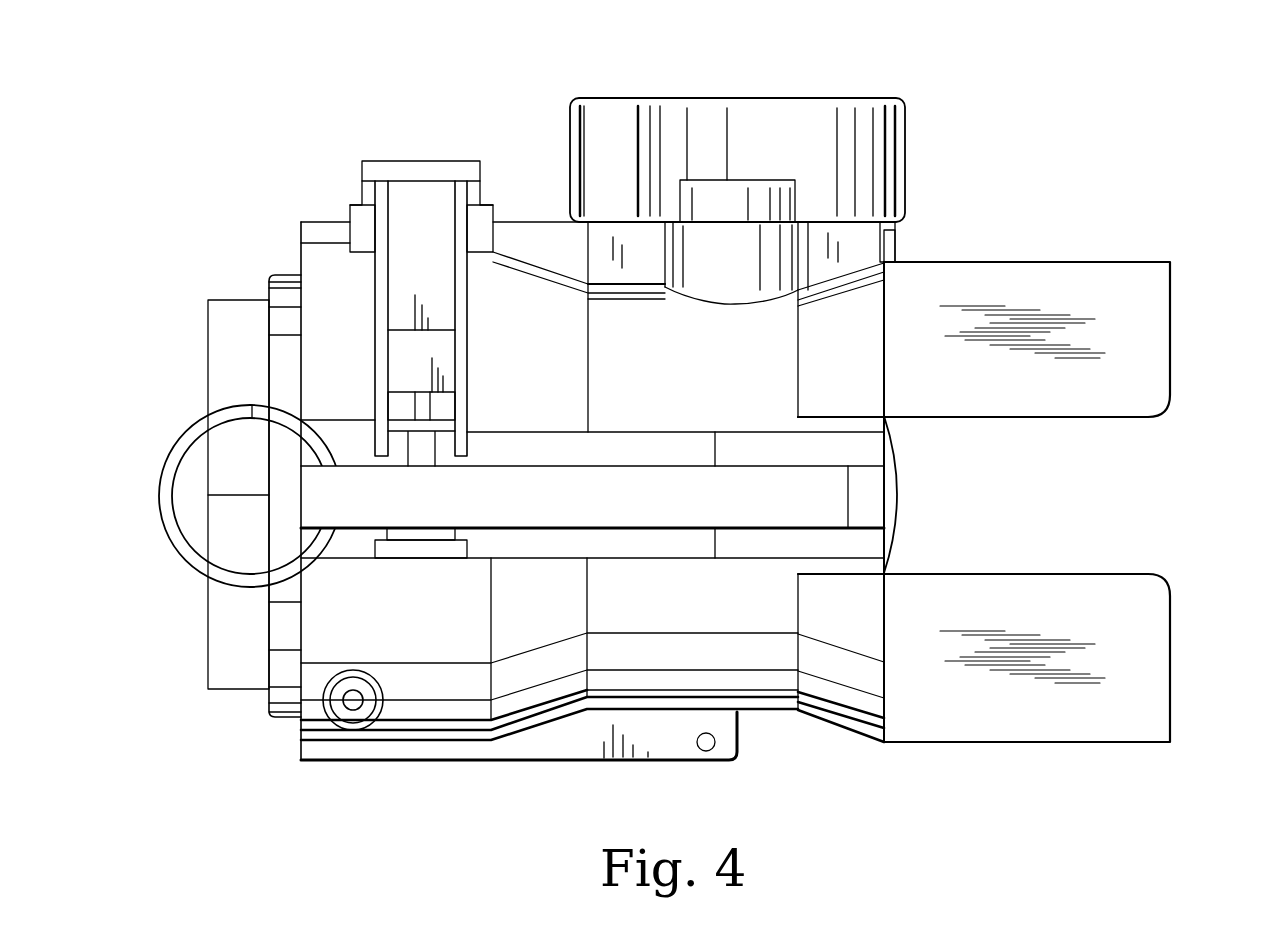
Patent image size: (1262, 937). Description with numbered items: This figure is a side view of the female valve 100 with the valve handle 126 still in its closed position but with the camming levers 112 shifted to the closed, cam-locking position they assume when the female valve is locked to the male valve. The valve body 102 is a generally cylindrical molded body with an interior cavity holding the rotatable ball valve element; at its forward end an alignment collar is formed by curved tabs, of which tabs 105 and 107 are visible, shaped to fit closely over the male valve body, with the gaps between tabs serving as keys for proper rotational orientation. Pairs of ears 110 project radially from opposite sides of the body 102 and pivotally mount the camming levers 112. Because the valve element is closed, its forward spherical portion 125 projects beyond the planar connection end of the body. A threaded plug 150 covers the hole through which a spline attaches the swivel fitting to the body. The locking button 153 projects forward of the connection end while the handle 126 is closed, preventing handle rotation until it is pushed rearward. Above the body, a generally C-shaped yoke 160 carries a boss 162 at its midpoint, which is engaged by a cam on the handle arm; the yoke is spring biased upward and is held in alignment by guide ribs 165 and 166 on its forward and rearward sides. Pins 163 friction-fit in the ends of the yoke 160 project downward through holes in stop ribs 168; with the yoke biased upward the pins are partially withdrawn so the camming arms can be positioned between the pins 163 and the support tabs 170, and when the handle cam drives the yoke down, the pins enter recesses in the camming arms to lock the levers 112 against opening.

The female valve 100 is at (1008, 830).
The valve body 102 is at (748, 652).
The curved tab 105 is at (1152, 333).
The curved tab 107 is at (1152, 660).
The ears 110 is at (855, 448).
The camming levers 112 is at (333, 502).
The spherical portion 125 is at (897, 494).
The valve handle 126 is at (790, 90).
The threaded plug 150 is at (354, 702).
The locking button 153 is at (897, 247).
The yoke 160 is at (414, 266).
The boss 162 is at (413, 167).
The pins 163 is at (420, 453).
The guide rib 165 is at (461, 311).
The guide rib 166 is at (378, 327).
The stop ribs 168 is at (400, 423).
The support tabs 170 is at (403, 550).